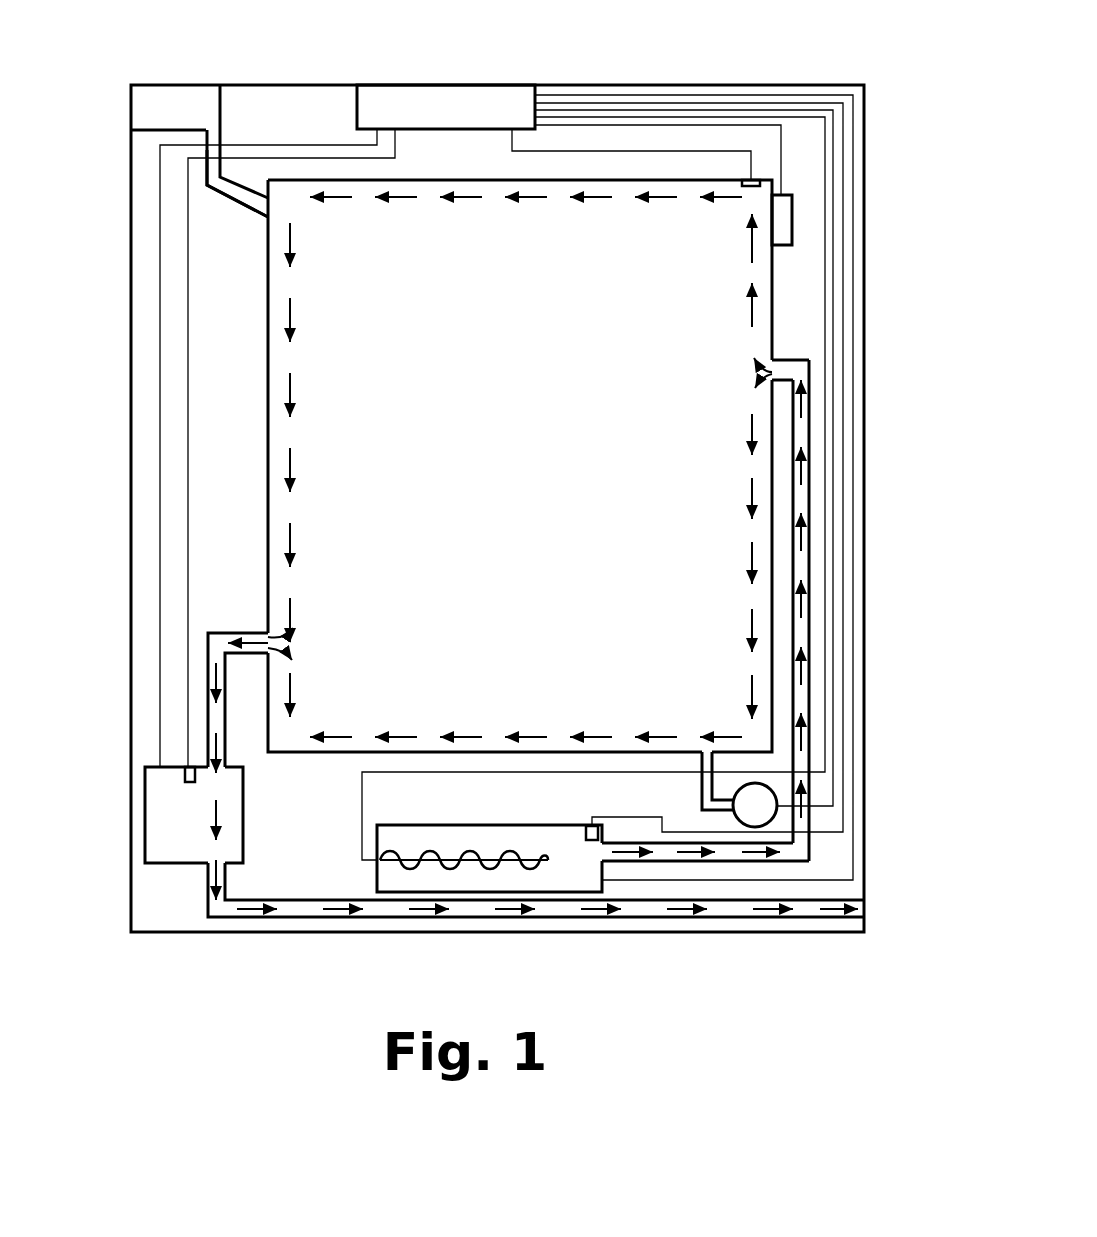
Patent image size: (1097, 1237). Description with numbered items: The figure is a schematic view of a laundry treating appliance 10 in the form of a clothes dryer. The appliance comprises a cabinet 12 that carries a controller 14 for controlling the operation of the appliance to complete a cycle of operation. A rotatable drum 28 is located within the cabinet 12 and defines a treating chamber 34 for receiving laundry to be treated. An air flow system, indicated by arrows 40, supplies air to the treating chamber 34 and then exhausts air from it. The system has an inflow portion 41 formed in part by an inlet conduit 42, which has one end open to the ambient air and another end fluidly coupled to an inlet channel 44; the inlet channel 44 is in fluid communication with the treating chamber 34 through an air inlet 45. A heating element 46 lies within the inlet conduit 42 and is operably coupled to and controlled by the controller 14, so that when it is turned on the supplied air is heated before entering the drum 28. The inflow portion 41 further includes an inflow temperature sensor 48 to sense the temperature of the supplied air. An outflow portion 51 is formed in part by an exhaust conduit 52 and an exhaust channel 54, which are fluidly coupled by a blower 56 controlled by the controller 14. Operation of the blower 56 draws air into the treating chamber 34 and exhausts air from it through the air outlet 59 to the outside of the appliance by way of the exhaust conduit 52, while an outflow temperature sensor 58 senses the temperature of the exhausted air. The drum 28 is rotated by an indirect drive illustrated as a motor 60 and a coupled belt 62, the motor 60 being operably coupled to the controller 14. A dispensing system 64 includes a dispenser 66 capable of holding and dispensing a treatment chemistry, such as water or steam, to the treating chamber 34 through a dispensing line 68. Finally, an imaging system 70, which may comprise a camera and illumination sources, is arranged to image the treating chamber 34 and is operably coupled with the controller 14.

The laundry treating appliance 10 is at (757, 26).
The cabinet 12 is at (803, 84).
The controller 14 is at (400, 84).
The rotatable drum 28 is at (268, 432).
The treating chamber 34 is at (589, 322).
The arrows 40 is at (625, 852).
The inflow portion 41 is at (826, 864).
The inlet conduit 42 is at (583, 893).
The inlet channel 44 is at (813, 540).
The air inlet 45 is at (776, 358).
The heating element 46 is at (415, 858).
The inflow temperature sensor 48 is at (590, 838).
The outflow portion 51 is at (195, 887).
The exhaust conduit 52 is at (320, 917).
The exhaust channel 54 is at (208, 663).
The blower 56 is at (145, 820).
The outflow temperature sensor 58 is at (185, 774).
The air outlet 59 is at (270, 633).
The motor 60 is at (743, 827).
The belt 62 is at (718, 806).
The dispensing system 64 is at (175, 82).
The dispenser 66 is at (222, 103).
The dispensing line 68 is at (220, 140).
The imaging system 70 is at (793, 213).